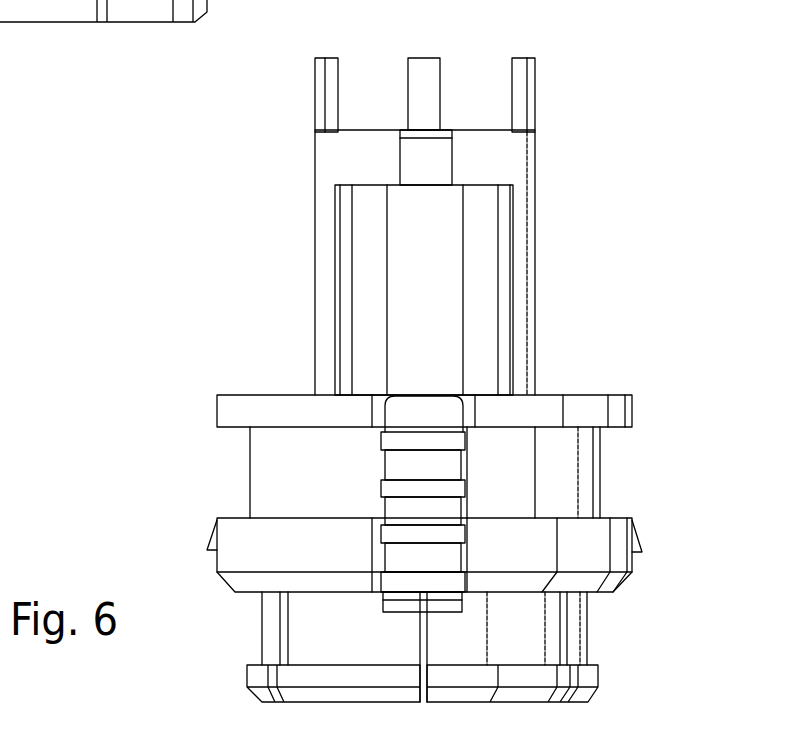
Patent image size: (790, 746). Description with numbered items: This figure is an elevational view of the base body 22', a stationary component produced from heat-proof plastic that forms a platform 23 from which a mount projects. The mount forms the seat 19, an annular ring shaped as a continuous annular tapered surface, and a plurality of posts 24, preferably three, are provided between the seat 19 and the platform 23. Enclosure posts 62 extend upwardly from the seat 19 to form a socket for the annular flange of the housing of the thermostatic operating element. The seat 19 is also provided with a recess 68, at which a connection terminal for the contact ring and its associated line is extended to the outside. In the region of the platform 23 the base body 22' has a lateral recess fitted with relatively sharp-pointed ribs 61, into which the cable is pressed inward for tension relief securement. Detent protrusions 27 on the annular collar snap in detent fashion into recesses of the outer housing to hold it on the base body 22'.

The base body 22' is at (409, 353).
The enclosure posts 62 is at (518, 72).
The seat 19 is at (503, 147).
The recess 68 is at (408, 135).
The posts 24 is at (328, 270).
The platform 23 is at (262, 407).
The ribs 61 is at (397, 535).
The detent protrusions 27 is at (208, 545).